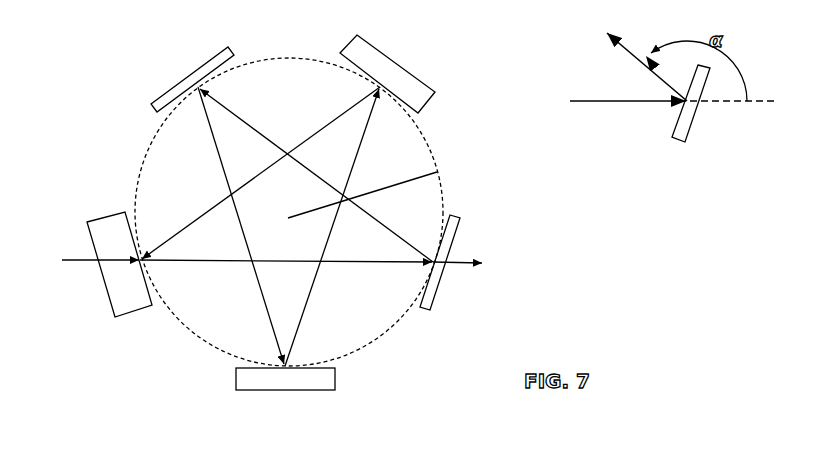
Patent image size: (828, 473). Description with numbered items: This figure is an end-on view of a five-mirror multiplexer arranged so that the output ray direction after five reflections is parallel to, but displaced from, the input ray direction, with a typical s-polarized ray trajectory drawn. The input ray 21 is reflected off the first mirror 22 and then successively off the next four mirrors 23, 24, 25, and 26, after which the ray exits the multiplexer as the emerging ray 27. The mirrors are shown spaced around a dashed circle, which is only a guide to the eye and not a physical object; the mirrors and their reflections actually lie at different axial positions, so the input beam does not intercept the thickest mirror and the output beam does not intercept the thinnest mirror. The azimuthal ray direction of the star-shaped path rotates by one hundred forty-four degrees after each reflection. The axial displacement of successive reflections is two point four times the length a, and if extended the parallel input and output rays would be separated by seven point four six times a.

The input ray 21 is at (80, 262).
The first mirror 22 is at (463, 225).
The mirror 23 is at (171, 84).
The mirror 24 is at (271, 394).
The mirror 25 is at (411, 70).
The mirror 26 is at (110, 298).
The exiting ray 27 is at (477, 267).
The unit length parameter a is at (362, 192).